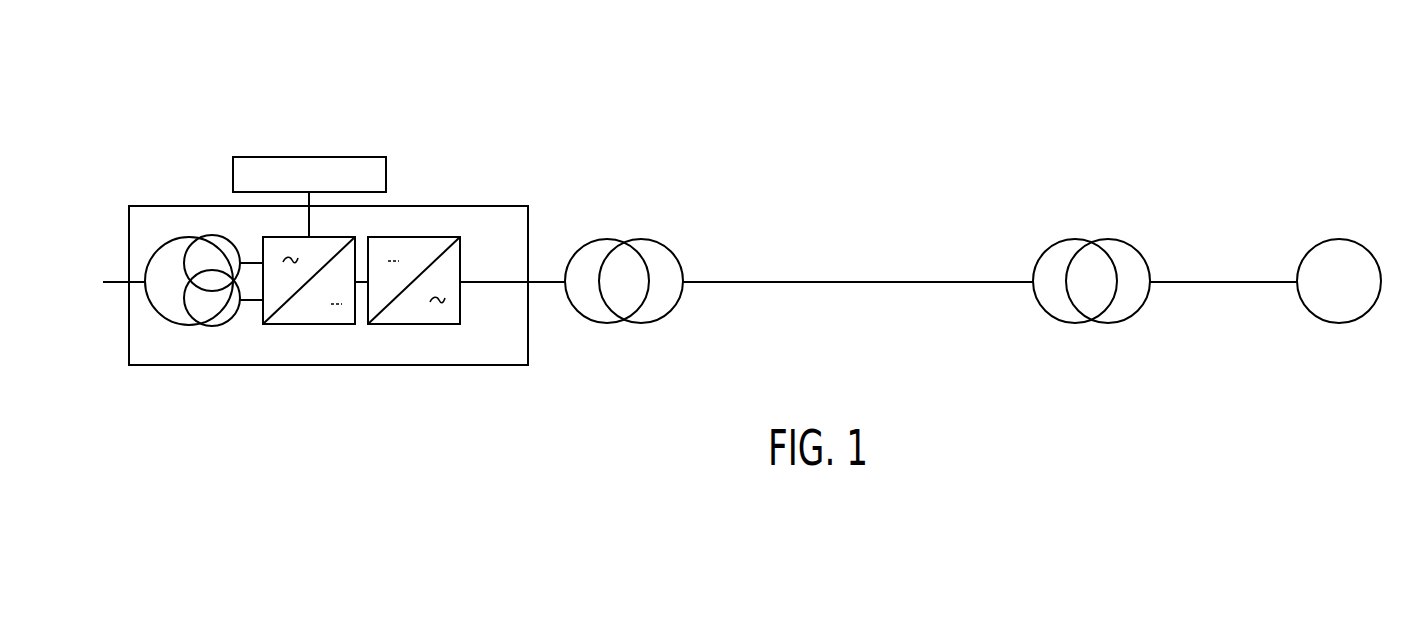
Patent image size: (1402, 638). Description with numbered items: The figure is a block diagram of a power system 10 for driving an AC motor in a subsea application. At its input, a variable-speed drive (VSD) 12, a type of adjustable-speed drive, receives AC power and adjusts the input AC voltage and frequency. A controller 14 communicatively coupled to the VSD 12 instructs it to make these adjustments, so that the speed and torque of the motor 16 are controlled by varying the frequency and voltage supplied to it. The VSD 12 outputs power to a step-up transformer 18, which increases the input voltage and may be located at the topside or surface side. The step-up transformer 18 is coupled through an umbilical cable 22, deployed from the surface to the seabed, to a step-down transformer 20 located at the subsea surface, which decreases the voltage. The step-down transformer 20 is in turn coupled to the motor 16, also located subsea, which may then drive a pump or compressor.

The power system 10 is at (898, 85).
The variable-speed drive (VSD) 12 is at (460, 206).
The controller 14 is at (308, 157).
The motor 16 is at (1308, 250).
The step-up transformer 18 is at (632, 322).
The step-down transformer 20 is at (1100, 322).
The cable 22 is at (857, 283).